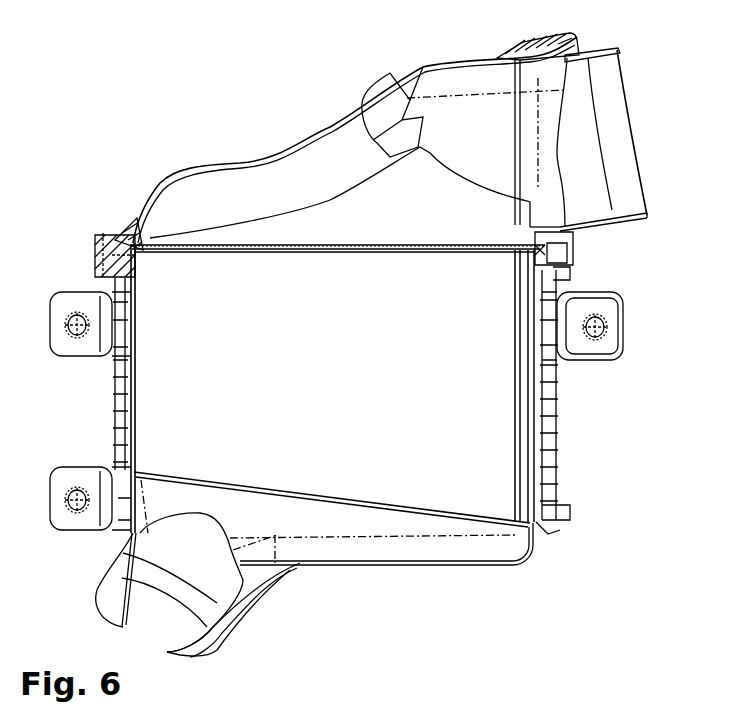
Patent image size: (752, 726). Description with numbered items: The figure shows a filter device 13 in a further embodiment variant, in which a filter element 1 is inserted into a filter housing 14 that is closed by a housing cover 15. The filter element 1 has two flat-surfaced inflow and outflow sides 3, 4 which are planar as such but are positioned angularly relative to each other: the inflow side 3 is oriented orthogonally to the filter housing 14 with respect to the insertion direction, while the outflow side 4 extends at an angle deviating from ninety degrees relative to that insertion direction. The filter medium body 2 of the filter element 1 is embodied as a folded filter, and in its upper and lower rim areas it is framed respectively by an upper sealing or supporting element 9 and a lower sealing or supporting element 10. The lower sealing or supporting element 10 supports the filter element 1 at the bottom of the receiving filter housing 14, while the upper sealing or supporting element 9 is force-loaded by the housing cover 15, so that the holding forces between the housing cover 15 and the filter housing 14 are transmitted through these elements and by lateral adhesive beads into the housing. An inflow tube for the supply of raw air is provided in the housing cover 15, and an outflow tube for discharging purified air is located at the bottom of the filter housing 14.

The filter element 1 is at (170, 402).
The filter medium body 2 is at (493, 410).
The inflow side 3 is at (352, 250).
The outflow side 4 is at (358, 505).
The upper sealing or supporting element 9 is at (540, 248).
The lower sealing or supporting element 10 is at (533, 527).
The filter device 13 is at (183, 123).
The filter housing 14 is at (552, 447).
The housing cover 15 is at (243, 163).